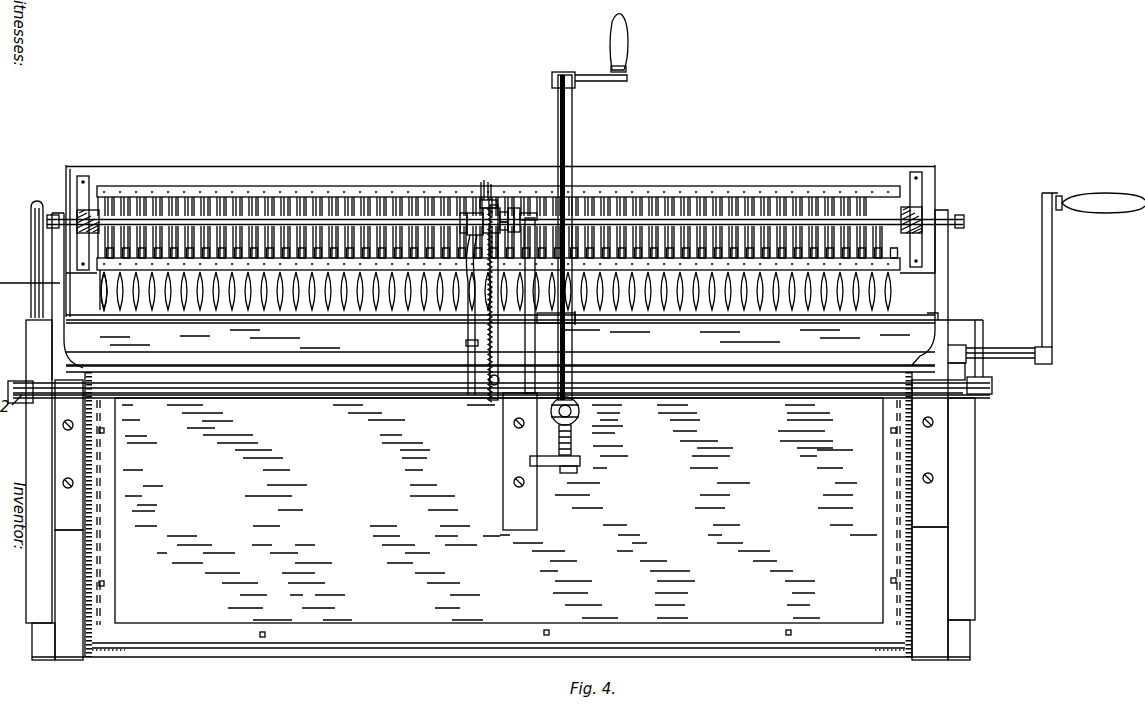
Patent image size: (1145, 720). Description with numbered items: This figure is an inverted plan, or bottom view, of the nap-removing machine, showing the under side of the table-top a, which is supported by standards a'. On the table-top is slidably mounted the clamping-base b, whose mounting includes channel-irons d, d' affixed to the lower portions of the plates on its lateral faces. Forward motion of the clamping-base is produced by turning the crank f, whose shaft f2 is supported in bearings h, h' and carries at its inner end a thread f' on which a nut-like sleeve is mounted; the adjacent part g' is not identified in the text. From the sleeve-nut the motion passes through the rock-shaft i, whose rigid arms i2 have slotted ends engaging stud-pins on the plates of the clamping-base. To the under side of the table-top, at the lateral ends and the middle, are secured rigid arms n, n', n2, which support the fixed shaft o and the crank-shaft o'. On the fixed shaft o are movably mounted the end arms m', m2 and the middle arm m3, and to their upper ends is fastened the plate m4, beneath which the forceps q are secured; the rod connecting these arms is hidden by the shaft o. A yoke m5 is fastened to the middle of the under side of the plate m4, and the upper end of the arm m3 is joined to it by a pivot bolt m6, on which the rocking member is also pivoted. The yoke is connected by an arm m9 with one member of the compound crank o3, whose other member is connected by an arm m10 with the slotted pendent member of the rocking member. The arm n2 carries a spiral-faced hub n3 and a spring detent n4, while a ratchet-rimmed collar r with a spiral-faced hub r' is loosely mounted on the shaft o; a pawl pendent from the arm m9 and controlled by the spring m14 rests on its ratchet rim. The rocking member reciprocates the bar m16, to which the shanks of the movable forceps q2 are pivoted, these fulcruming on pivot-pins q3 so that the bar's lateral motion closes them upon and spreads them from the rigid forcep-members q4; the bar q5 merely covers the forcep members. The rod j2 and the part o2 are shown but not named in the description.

The table-top a is at (501, 514).
The standards a' is at (499, 528).
The clamping-base b is at (524, 342).
The channel-iron d is at (961, 529).
The channel-iron d' is at (40, 490).
The crank f is at (590, 51).
The thread f' is at (592, 449).
The shaft f2 is at (573, 142).
The valve g' is at (598, 416).
The bearing h is at (589, 325).
The bearing h' is at (529, 461).
The rock-shaft i is at (306, 406).
The rigid arms i2 is at (992, 386).
The rod j2 is at (29, 225).
The arm m' is at (934, 217).
The arm m2 is at (82, 190).
The middle arm m3 is at (470, 210).
The plate m4 is at (300, 177).
The yoke m5 is at (472, 215).
The pivot bolt m6 is at (488, 186).
The arm m9 is at (464, 225).
The arm m10 is at (488, 300).
The spring m14 is at (490, 385).
The bar m16 is at (845, 180).
The rigid arm n is at (938, 435).
The rigid arm n' is at (67, 436).
The rigid arm n2 is at (535, 235).
The spiral-faced hub n3 is at (517, 210).
The spring detent n4 is at (511, 210).
The fixed shaft o is at (515, 210).
The crank-shaft o' is at (500, 336).
The crank o2 is at (1046, 278).
The compound crank o3 is at (470, 385).
The forceps q is at (505, 291).
The movable forceps q2 is at (100, 300).
The pivot-pins q3 is at (158, 192).
The forcep-members q4 is at (100, 290).
The bar q5 is at (888, 262).
The ratchet-rimmed collar r is at (507, 180).
The spiral-faced hub r' is at (512, 174).